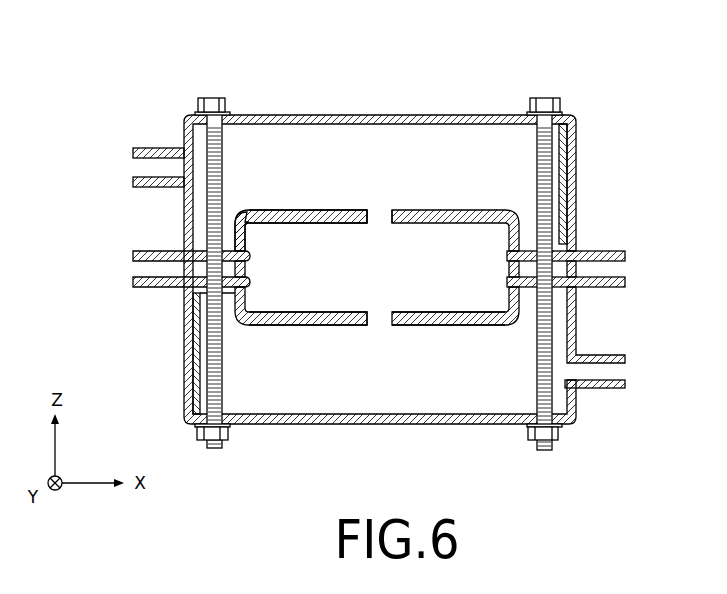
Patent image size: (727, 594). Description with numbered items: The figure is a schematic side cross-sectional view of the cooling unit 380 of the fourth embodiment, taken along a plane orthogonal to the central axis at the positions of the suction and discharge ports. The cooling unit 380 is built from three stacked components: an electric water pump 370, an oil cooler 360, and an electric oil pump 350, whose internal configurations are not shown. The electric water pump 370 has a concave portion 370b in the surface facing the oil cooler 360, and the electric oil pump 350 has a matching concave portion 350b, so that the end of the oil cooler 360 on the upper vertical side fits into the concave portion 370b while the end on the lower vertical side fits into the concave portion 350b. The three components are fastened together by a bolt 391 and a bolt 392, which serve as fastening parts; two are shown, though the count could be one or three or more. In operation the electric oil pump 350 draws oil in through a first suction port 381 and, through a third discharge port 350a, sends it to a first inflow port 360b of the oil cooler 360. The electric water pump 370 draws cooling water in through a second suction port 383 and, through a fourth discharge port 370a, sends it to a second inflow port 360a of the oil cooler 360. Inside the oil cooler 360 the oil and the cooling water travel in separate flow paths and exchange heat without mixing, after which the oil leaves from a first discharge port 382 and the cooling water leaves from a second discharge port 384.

The cooling unit 380 is at (393, 240).
The electric water pump 370 is at (426, 242).
The fourth discharge port 370a is at (368, 215).
The concave portion 370b is at (520, 234).
The oil cooler 360 is at (360, 268).
The second inflow port 360a is at (373, 223).
The first inflow port 360b is at (389, 313).
The electric oil pump 350 is at (512, 343).
The third discharge port 350a is at (390, 313).
The concave portion 350b is at (572, 303).
The first suction port 381 is at (596, 378).
The first discharge port 382 is at (596, 263).
The second suction port 383 is at (163, 172).
The second discharge port 384 is at (163, 275).
The bolt 391 is at (224, 152).
The bolt 392 is at (536, 156).